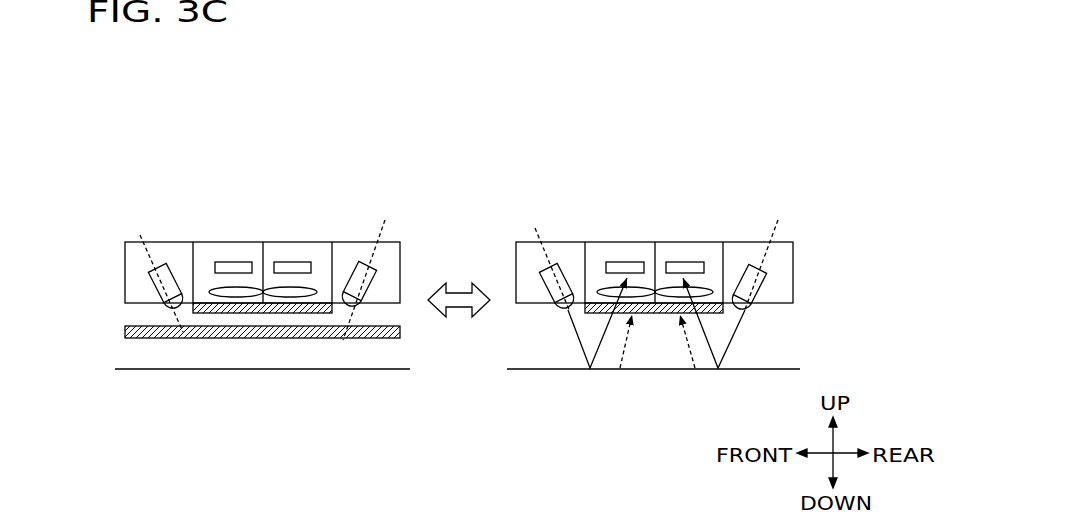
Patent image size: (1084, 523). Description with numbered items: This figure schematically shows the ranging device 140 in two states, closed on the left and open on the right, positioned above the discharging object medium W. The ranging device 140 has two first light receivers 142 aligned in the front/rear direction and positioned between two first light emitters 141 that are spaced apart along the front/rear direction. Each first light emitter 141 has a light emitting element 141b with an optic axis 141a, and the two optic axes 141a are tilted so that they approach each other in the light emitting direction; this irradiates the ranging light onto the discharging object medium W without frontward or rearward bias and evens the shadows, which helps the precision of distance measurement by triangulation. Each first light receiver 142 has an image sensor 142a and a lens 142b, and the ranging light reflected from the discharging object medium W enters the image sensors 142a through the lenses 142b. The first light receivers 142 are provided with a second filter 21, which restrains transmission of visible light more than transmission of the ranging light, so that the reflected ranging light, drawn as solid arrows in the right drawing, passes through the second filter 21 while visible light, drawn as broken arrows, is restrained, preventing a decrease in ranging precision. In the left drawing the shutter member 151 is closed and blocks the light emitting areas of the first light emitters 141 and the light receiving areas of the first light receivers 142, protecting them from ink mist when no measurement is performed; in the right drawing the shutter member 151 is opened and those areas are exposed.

The ranging device 140 is at (393, 142).
The first light emitter 141 is at (150, 283).
The optic axis 141a is at (143, 231).
The light emitting element 141b is at (170, 308).
The first light receiver 142 is at (203, 170).
The image sensor 142a is at (233, 262).
The lens 142b is at (211, 289).
The shutter member 151 is at (150, 338).
The second filter 21 is at (253, 313).
The discharging object medium W is at (350, 362).